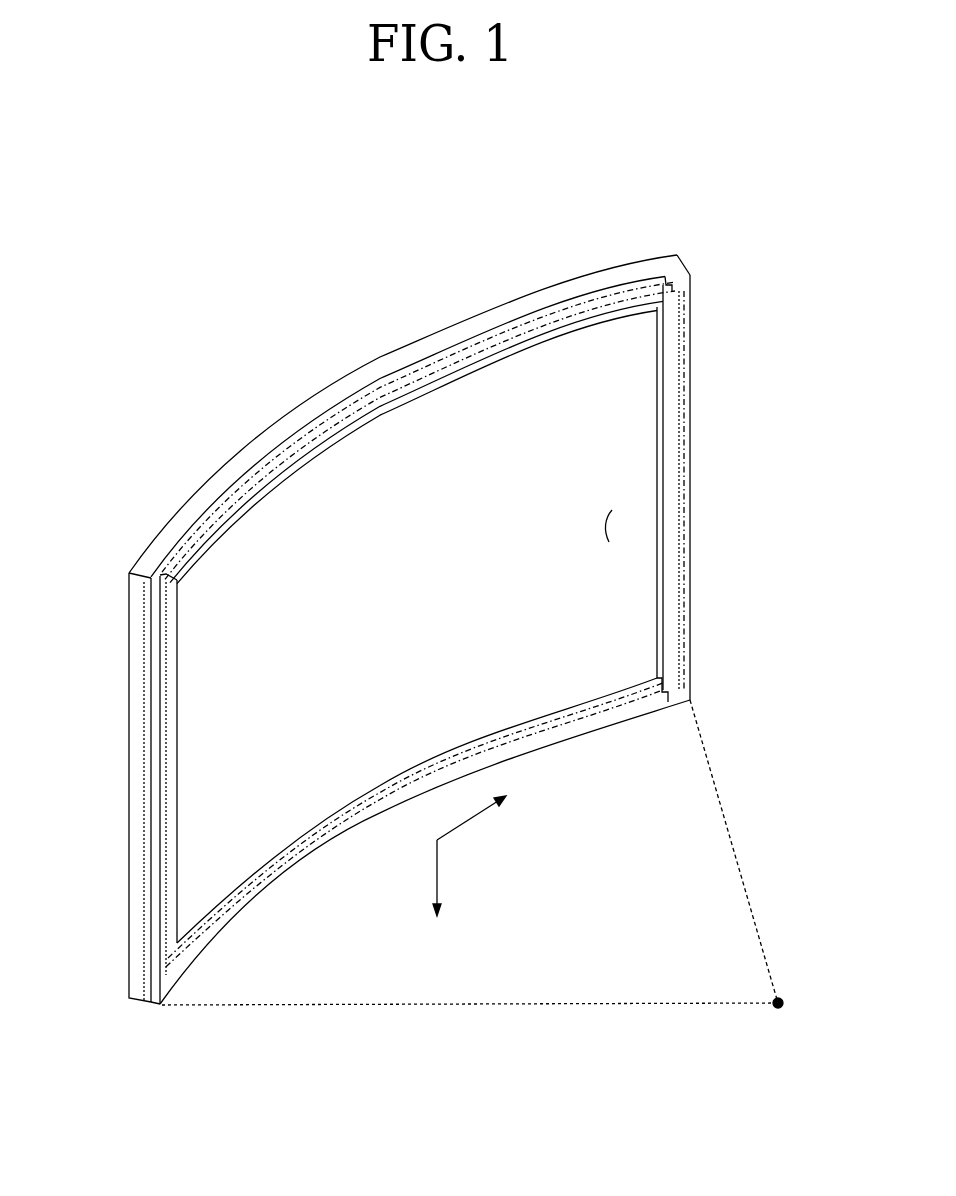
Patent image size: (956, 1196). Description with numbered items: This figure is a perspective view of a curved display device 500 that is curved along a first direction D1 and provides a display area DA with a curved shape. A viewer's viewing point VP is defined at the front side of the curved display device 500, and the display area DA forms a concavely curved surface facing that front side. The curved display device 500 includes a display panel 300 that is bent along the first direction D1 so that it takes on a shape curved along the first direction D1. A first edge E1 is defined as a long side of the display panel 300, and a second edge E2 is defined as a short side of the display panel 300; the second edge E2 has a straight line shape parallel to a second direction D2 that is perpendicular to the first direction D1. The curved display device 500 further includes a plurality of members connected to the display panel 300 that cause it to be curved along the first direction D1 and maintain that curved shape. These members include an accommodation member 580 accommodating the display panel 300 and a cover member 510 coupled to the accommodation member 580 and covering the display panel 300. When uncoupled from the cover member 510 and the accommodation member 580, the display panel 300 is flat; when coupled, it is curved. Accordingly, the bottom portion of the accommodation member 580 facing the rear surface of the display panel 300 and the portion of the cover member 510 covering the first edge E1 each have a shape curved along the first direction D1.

The curved display device 500 is at (417, 597).
The cover member 510 is at (447, 352).
The accommodation member 580 is at (348, 388).
The display panel 300 is at (685, 440).
The first edge E1 is at (409, 419).
The second edge E2 is at (147, 697).
The display area DA is at (613, 520).
The first direction D1 is at (486, 812).
The second direction D2 is at (434, 894).
The viewing point VP is at (490, 858).